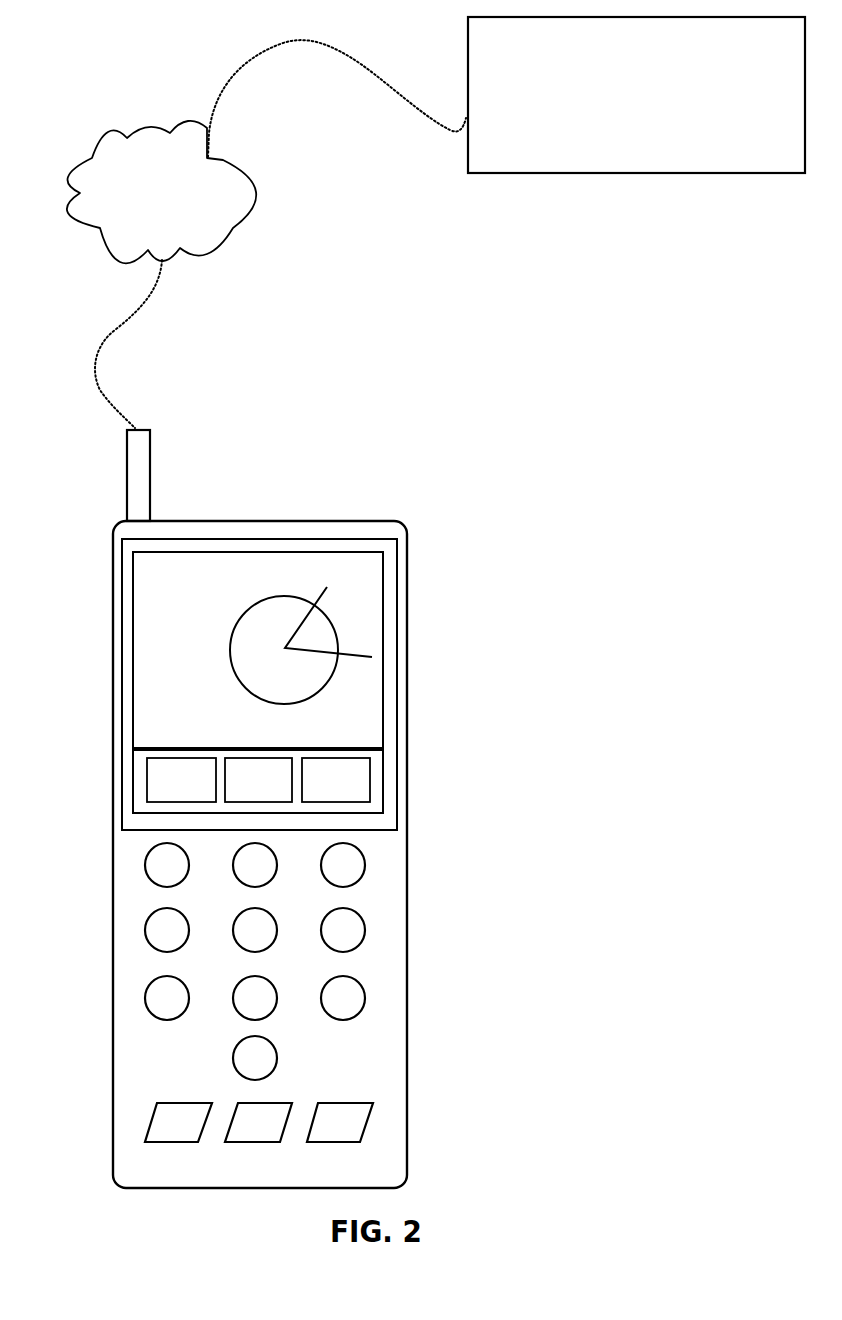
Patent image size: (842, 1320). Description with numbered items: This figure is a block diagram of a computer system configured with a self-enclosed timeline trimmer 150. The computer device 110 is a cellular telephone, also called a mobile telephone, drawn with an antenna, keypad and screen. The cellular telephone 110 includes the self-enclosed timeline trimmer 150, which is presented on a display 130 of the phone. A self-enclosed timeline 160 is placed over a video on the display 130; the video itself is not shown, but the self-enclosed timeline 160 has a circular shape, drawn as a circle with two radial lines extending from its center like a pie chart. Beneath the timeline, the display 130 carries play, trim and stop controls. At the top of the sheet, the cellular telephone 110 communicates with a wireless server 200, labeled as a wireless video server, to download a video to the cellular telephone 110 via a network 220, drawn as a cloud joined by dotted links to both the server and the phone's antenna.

The computer device 110 is at (406, 880).
The display 130 is at (120, 831).
The self-enclosed timeline trimmer 150 is at (133, 603).
The self-enclosed timeline 160 is at (232, 636).
The wireless server 200 is at (636, 95).
The network 220 is at (161, 192).